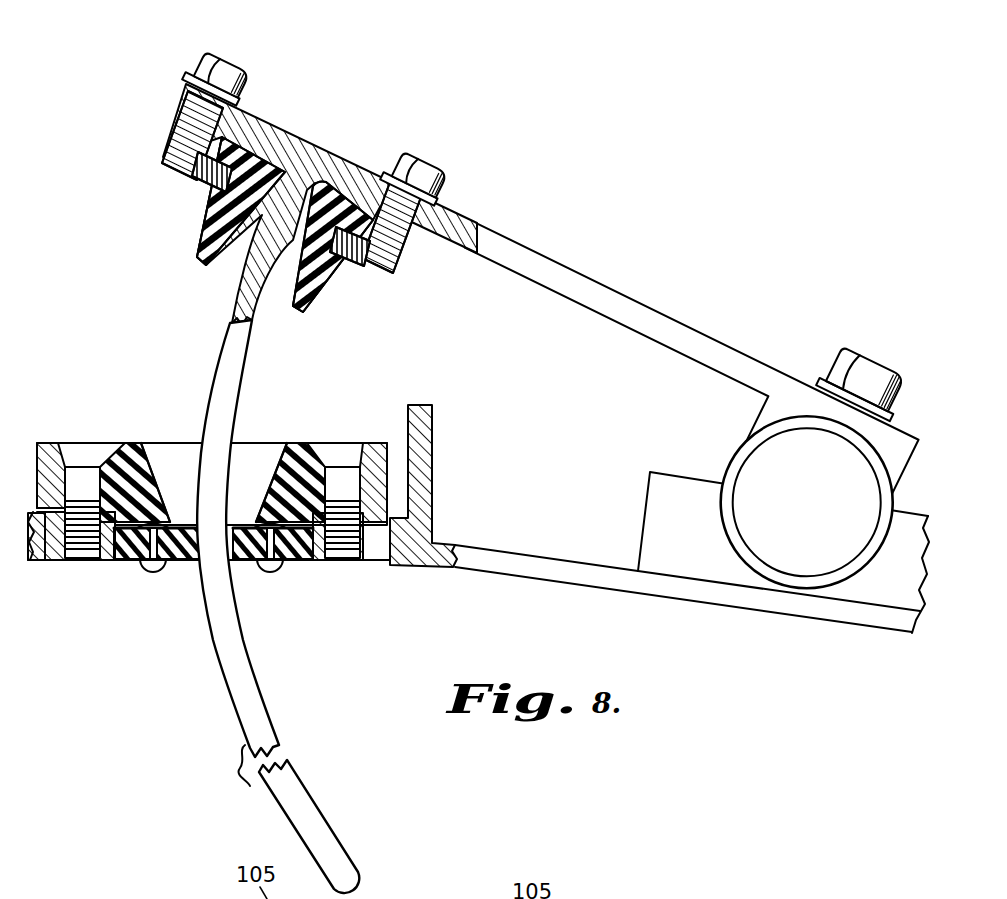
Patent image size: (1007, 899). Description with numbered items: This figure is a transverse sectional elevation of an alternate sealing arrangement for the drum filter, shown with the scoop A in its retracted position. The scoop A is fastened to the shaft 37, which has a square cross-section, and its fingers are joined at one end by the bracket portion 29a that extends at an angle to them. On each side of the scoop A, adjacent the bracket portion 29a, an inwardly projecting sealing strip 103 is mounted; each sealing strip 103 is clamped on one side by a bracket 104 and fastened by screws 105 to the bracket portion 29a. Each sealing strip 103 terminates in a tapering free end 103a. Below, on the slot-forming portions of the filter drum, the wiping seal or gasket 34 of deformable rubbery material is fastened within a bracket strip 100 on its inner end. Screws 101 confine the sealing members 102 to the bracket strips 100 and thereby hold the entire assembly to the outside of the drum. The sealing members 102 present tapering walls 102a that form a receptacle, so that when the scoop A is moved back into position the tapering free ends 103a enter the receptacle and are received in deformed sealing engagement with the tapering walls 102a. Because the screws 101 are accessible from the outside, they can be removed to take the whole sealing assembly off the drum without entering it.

The bracket portion 29a is at (533, 256).
The shaft 37 is at (831, 556).
The bracket strips 100 is at (47, 558).
The screws 101 is at (76, 445).
The sealing members 102 is at (130, 456).
The tapering walls 102a is at (163, 480).
The sealing strip 103 is at (243, 141).
The tapering free end 103a is at (218, 245).
The brackets 104 is at (214, 175).
The screws 105 is at (229, 66).
The seal or gasket 34 is at (183, 557).
The scoop A is at (240, 685).